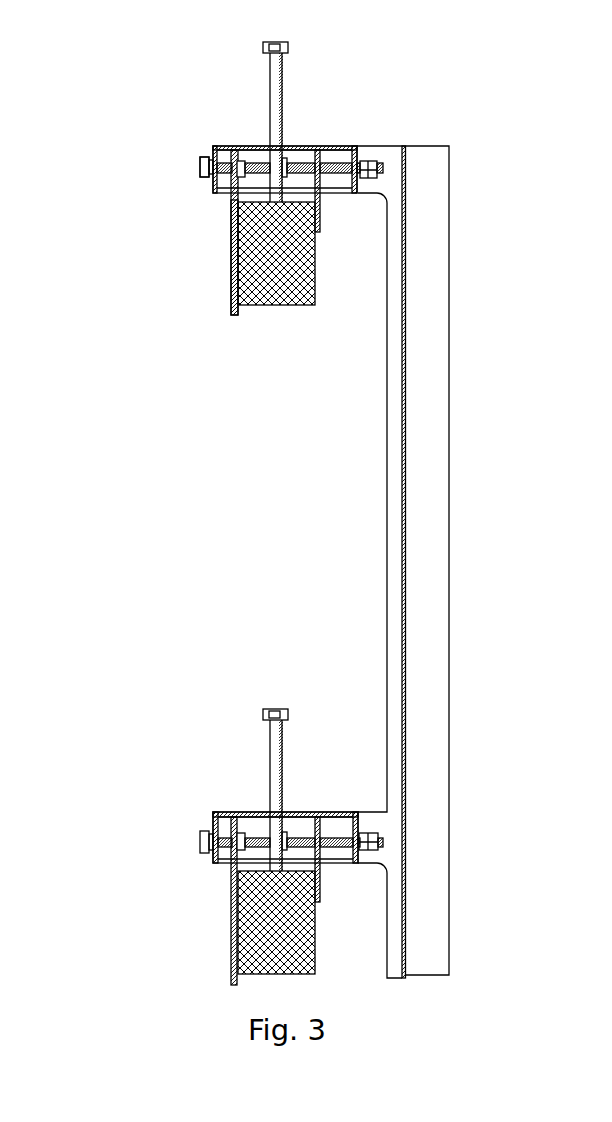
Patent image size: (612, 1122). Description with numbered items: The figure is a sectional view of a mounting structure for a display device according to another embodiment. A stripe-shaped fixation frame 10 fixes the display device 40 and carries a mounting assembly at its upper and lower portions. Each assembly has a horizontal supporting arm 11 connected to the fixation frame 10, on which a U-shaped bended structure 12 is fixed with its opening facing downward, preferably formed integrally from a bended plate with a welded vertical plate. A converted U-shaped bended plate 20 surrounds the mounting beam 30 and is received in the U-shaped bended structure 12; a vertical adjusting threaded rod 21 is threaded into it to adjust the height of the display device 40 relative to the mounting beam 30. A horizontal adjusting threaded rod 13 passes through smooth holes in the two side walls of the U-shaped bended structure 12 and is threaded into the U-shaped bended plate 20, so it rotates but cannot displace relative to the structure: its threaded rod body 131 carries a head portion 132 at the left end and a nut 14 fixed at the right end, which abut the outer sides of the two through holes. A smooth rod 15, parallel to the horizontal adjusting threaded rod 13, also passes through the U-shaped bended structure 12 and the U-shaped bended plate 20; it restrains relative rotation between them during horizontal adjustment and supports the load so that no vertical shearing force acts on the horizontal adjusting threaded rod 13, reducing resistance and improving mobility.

The fixation frame 10 is at (392, 217).
The horizontal supporting arm 11 is at (350, 147).
The U-shaped bended structure 12 is at (217, 145).
The horizontal adjusting threaded rod 13 is at (202, 163).
The threaded rod body 131 is at (303, 165).
The head portion 132 is at (202, 177).
The nut 14 is at (378, 163).
The smooth rod 15 is at (233, 200).
The U-shaped bended plate 20 is at (235, 295).
The vertical adjusting threaded rod 21 is at (262, 46).
The mounting beam 30 is at (315, 295).
The display device 40 is at (428, 388).